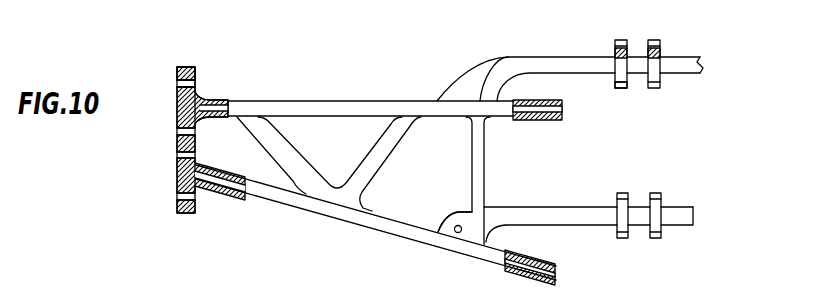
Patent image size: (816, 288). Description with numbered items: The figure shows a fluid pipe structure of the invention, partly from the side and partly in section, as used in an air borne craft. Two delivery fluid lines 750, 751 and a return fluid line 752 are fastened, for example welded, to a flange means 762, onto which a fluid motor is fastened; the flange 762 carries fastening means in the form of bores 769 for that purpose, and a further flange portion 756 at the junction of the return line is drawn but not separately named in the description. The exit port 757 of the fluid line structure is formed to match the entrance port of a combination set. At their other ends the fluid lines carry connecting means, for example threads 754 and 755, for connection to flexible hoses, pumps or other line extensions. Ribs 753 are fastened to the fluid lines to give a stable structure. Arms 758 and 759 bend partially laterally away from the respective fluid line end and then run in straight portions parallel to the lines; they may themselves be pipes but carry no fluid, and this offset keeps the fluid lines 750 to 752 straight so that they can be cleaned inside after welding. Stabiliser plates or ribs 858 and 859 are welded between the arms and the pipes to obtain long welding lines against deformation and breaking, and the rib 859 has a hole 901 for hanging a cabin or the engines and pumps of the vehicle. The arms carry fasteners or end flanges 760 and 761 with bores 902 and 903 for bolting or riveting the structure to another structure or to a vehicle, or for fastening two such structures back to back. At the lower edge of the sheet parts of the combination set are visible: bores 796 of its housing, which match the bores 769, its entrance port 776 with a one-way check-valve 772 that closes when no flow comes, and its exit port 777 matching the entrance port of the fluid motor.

The delivery fluid line 750 is at (363, 154).
The delivery fluid line 751 is at (324, 208).
The return fluid line 752 is at (320, 101).
The ribs 753 is at (396, 144).
The threads 754 is at (562, 110).
The threads 755 is at (556, 276).
The upper arm hub 756 is at (177, 107).
The exit port 757 is at (177, 164).
The arm 758 is at (546, 57).
The arm 759 is at (543, 207).
The fastener (end flange) 760 is at (656, 193).
The fastener (end flange) 761 is at (627, 88).
The flange means 762 is at (194, 67).
The bores 769 is at (195, 82).
The stabiliser plate or rib 858 is at (458, 86).
The stabiliser plate or rib 859 is at (450, 222).
The hole 901 is at (457, 234).
The bore 902 is at (616, 42).
The bore 903 is at (660, 42).
The fasteners or bores 796 is at (44, 287).
The exit port 777 is at (73, 287).
The check-valve 772 is at (121, 287).
The entrance port 776 is at (157, 276).